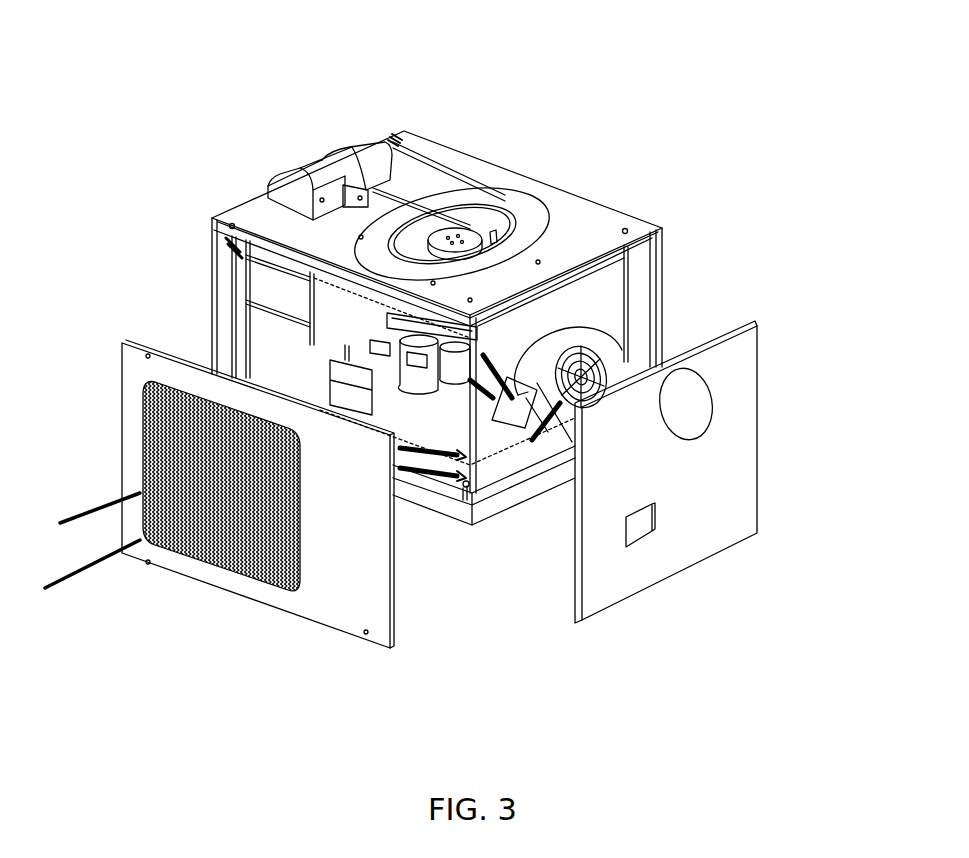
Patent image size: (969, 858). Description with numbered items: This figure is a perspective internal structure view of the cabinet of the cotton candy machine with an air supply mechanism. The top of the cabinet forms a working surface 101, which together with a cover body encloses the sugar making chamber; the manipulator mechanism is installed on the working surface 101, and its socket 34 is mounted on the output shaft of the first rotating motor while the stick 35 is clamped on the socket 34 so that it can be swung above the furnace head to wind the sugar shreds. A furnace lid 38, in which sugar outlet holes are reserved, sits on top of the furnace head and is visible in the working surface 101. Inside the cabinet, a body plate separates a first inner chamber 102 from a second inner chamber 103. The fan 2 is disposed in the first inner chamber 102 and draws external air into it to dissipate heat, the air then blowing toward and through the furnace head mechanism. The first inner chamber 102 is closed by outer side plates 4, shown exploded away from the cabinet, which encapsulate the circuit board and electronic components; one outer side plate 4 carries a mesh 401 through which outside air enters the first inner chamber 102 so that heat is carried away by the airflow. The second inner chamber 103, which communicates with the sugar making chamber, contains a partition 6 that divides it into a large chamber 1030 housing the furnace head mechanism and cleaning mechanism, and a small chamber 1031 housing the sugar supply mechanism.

The fan 2 is at (560, 318).
The outer side plate 4 is at (128, 397).
The partition 6 is at (330, 300).
The socket 34 is at (330, 181).
The stick 35 is at (462, 242).
The furnace lid 38 is at (495, 215).
The working surface 101 is at (355, 150).
The first inner chamber 102 is at (455, 497).
The second inner chamber 103 is at (602, 293).
The mesh 401 is at (200, 555).
The large chamber 1030 is at (407, 413).
The small chamber 1031 is at (288, 318).